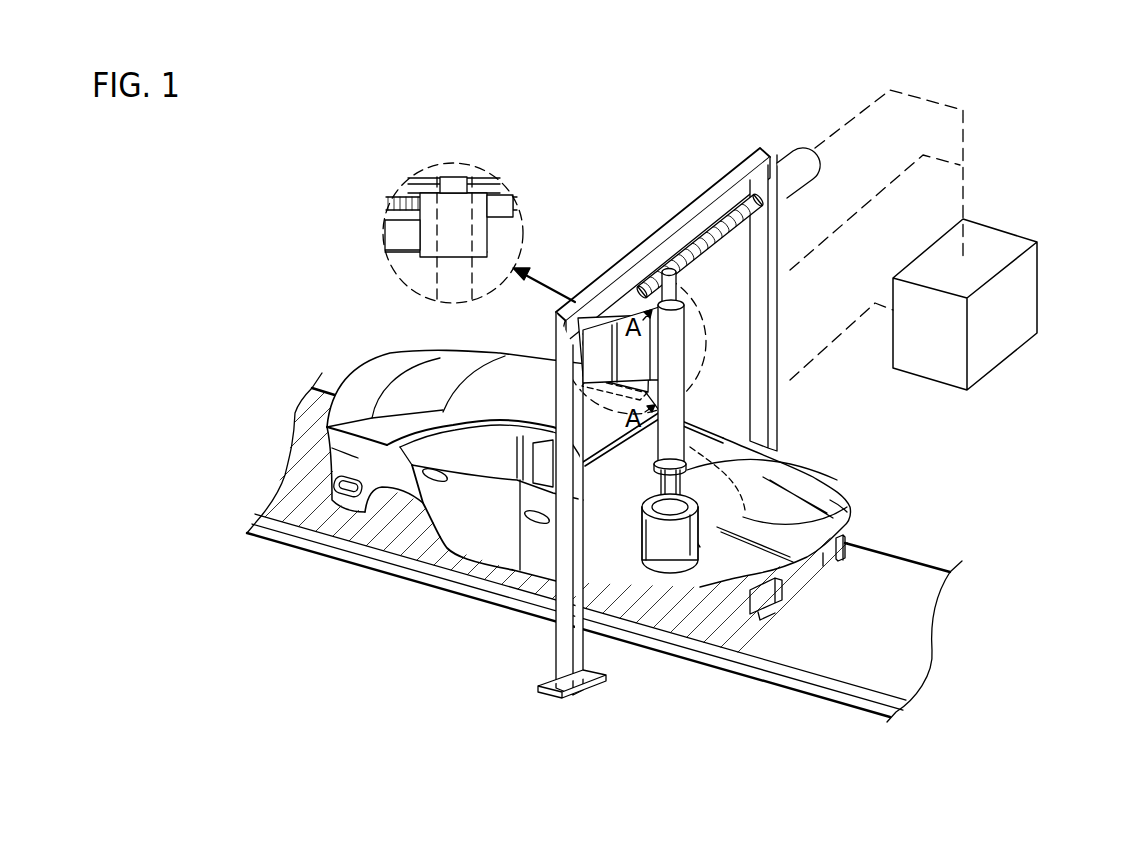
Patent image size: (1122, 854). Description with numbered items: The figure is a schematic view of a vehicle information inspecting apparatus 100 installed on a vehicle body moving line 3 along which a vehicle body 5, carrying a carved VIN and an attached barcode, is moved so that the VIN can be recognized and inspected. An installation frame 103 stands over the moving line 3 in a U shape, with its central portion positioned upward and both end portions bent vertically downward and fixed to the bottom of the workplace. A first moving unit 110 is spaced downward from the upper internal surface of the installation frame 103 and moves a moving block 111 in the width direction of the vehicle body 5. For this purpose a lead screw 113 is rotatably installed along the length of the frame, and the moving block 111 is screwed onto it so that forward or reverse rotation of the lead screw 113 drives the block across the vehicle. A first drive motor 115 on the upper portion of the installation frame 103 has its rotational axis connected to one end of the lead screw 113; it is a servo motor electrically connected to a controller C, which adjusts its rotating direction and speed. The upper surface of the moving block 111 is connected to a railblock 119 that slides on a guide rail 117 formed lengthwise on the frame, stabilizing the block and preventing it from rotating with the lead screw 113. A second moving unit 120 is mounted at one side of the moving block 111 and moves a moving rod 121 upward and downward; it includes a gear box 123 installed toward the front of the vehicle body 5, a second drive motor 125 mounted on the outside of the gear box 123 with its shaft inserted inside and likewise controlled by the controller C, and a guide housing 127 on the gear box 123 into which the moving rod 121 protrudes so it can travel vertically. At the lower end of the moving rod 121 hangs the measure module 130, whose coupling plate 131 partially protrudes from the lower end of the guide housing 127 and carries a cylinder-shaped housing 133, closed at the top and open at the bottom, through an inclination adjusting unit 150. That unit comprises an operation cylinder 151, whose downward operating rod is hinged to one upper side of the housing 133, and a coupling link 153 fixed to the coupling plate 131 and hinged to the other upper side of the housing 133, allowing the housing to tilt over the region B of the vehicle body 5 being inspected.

The vehicle body moving line 3 is at (840, 708).
The vehicle body 5 is at (352, 465).
The vehicle information inspecting apparatus 100 is at (672, 200).
The installation frame 103 is at (474, 178).
The first moving unit 110 is at (810, 143).
The moving block 111 is at (513, 213).
The lead screw 113 is at (513, 200).
The first drive motor 115 is at (790, 170).
The guide rail 117 is at (493, 182).
The railblock 119 is at (440, 182).
The second moving unit 120 is at (690, 312).
The moving rod 121 is at (673, 293).
The gear box 123 is at (428, 252).
The second drive motor 125 is at (433, 283).
The guide housing 127 is at (400, 237).
The measure module 130 is at (652, 582).
The coupling plate 131 is at (684, 425).
The housing 133 is at (677, 562).
The inclination adjusting unit 150 is at (690, 489).
The operation cylinder 151 is at (648, 574).
The coupling link 153 is at (683, 480).
The vehicle body portion B is at (847, 512).
The controller C is at (1037, 285).